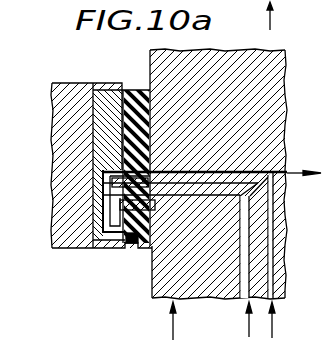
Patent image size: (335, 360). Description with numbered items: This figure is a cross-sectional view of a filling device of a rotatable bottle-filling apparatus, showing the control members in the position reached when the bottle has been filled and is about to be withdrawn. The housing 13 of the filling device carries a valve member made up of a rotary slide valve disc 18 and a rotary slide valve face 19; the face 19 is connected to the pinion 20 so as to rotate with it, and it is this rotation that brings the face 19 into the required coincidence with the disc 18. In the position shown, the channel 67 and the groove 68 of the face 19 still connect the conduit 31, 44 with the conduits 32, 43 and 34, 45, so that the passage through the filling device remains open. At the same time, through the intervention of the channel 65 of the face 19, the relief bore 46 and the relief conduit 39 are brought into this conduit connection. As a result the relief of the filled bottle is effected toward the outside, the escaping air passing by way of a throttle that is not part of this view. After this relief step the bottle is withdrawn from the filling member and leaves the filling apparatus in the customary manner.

The housing 13 is at (275, 64).
The rotary slide valve disc 18 is at (131, 90).
The rotary slide valve face 19 is at (86, 90).
The pinion 20 is at (50, 94).
The conduit 31 is at (150, 292).
The conduit 32 is at (262, 283).
The conduit 34 is at (280, 222).
The relief conduit 39 is at (288, 166).
The conduit 43 is at (158, 215).
The conduit 44 is at (130, 244).
The conduit 45 is at (179, 171).
The relief bore 46 is at (162, 168).
The channel 65 is at (108, 182).
The channel 67 is at (116, 220).
The groove 68 is at (114, 223).